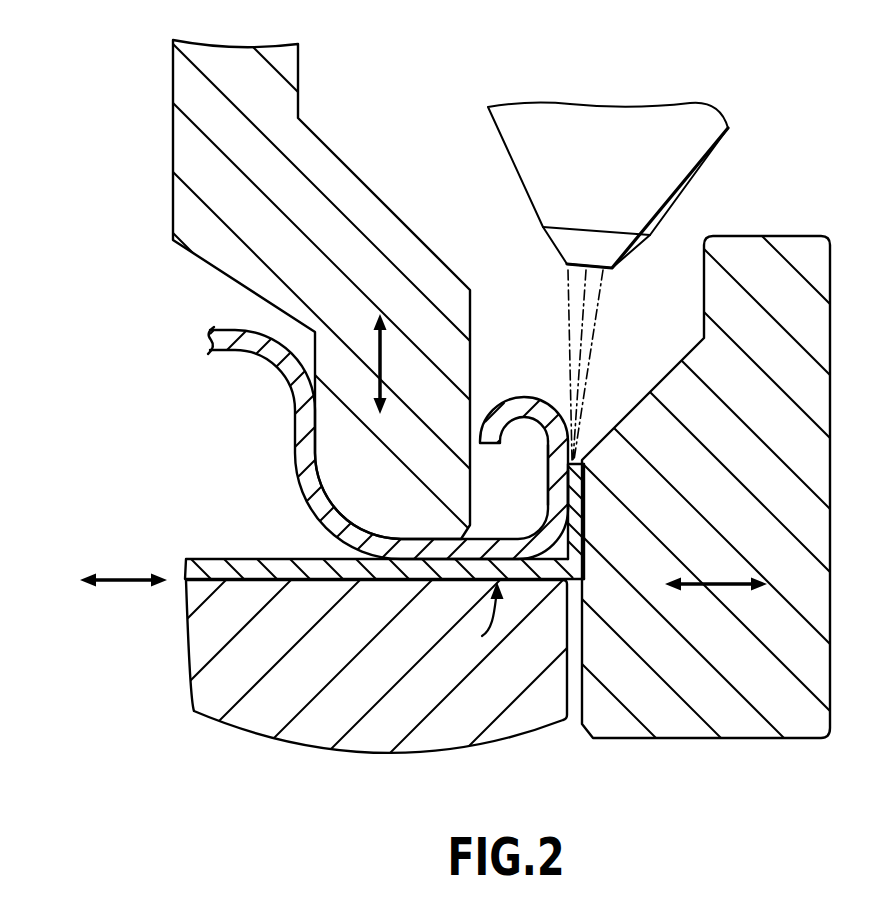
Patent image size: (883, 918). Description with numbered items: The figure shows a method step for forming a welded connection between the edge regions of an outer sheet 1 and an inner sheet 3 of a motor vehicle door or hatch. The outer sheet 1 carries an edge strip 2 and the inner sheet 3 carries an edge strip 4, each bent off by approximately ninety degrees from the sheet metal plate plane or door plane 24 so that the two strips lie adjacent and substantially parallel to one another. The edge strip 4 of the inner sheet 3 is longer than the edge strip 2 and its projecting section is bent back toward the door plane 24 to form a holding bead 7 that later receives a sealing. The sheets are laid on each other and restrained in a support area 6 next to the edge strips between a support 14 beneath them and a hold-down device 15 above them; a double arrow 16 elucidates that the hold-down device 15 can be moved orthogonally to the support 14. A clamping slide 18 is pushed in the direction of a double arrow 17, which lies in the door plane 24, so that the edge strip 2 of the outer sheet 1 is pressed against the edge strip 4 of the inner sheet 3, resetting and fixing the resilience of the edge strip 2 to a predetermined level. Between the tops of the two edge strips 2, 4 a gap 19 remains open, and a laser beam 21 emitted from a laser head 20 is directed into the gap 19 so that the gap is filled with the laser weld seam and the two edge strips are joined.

The outer sheet 1 is at (312, 582).
The edge strip 2 is at (582, 496).
The inner sheet 3 is at (270, 362).
The edge strip 4 is at (556, 452).
The support area 6 is at (482, 617).
The holding bead 7 is at (512, 404).
The support 14 is at (398, 698).
The hold-down device 15 is at (192, 153).
The double arrow 16 is at (378, 362).
The double arrow 17 is at (722, 587).
The clamping slide 18 is at (806, 525).
The gap 19 is at (560, 493).
The laser head 20 is at (683, 163).
The laser beam 21 is at (596, 390).
The sheet metal plate plane / door plane 24 is at (122, 578).